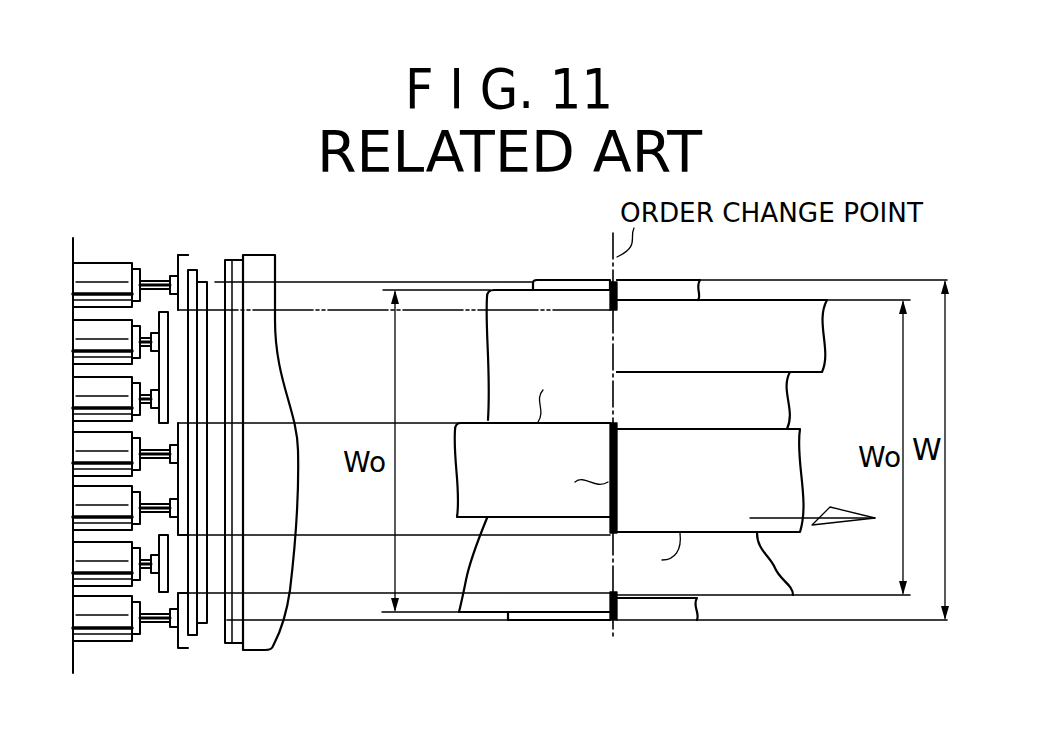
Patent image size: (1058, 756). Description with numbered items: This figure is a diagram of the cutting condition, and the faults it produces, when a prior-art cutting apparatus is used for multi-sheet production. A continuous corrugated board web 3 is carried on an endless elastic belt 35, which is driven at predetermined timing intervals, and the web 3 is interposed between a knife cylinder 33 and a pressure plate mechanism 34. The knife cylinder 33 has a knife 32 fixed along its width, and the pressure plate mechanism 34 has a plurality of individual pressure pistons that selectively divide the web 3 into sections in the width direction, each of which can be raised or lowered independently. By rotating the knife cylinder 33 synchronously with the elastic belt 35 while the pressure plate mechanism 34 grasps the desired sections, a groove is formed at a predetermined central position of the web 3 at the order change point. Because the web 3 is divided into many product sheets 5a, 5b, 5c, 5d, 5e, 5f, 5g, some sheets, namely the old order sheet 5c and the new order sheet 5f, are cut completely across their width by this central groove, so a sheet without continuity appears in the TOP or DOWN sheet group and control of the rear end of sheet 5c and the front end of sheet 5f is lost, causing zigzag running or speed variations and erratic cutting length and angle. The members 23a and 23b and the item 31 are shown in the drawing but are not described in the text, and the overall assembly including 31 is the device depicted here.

The corrugated board web 3 is at (200, 488).
The product sheet 5a is at (722, 336).
The product sheet 5b is at (703, 400).
The old order sheet 5c is at (746, 480).
The product sheet 5d is at (750, 564).
The product sheet 5e is at (502, 370).
The new order sheet 5f is at (477, 480).
The product sheet 5g is at (485, 572).
The guide member 23a is at (678, 282).
The guide member 23b is at (567, 284).
The order changing device 31 is at (125, 254).
The knife 32 is at (238, 348).
The knife cylinder 33 is at (268, 388).
The pressure plate mechanism 34 is at (108, 642).
The endless elastic belt 35 is at (194, 636).